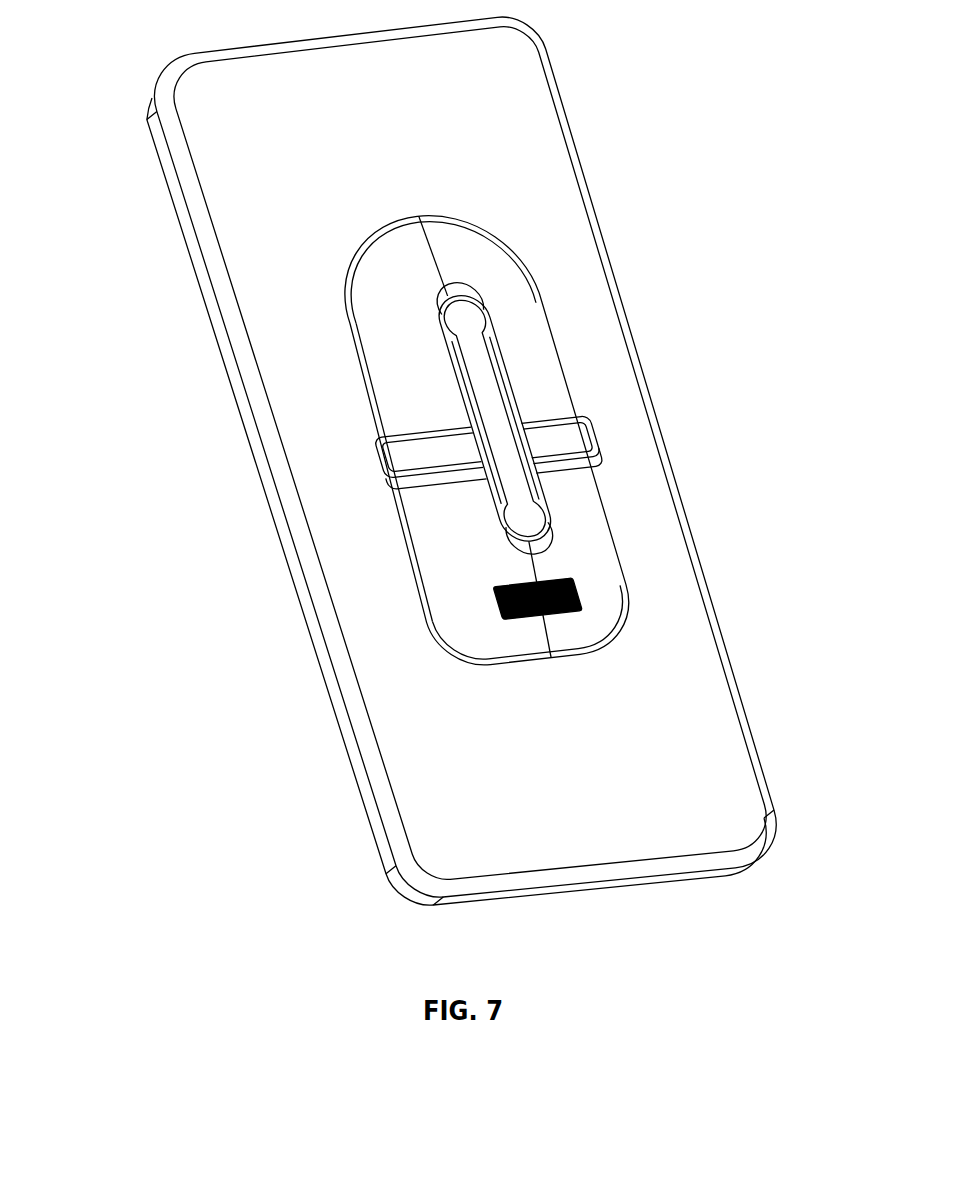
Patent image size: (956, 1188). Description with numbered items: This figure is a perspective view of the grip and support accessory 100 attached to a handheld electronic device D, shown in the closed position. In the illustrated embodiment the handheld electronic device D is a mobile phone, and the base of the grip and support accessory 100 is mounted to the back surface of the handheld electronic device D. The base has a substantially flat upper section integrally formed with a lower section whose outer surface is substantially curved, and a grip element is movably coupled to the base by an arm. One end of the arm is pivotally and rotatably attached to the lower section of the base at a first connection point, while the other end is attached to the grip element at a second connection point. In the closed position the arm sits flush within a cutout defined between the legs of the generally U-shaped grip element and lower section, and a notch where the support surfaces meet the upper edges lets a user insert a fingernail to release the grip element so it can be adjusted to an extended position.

The handheld electronic device D is at (253, 165).
The grip and support accessory 100 is at (300, 326).